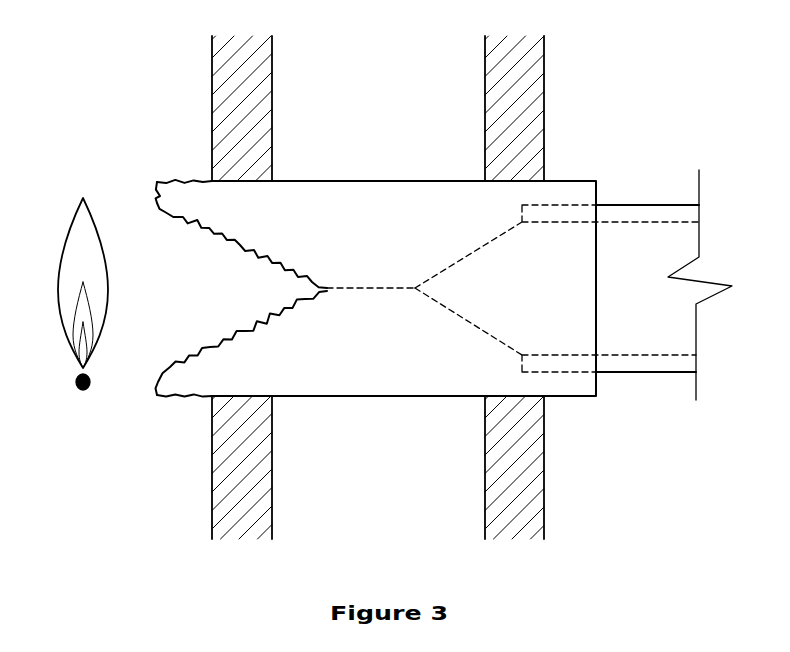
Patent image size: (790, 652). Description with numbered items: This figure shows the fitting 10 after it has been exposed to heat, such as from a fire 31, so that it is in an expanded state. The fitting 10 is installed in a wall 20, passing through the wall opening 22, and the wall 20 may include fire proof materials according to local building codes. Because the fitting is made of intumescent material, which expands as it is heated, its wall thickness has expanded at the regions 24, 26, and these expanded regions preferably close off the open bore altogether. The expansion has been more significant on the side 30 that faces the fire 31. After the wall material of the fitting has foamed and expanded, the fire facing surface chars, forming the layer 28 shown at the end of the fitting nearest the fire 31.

The fitting 10 is at (414, 310).
The wall 20 is at (273, 65).
The wall opening 22 is at (546, 178).
The expanded wall thickness portion 24 is at (380, 343).
The expanded wall thickness portion 26 is at (380, 243).
The char layer 28 is at (156, 194).
The fire facing side 30 is at (168, 424).
The fire 31 is at (62, 312).